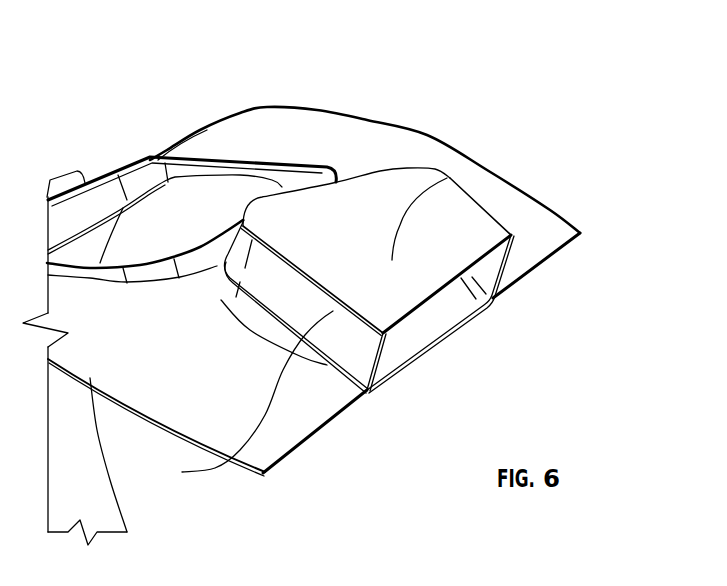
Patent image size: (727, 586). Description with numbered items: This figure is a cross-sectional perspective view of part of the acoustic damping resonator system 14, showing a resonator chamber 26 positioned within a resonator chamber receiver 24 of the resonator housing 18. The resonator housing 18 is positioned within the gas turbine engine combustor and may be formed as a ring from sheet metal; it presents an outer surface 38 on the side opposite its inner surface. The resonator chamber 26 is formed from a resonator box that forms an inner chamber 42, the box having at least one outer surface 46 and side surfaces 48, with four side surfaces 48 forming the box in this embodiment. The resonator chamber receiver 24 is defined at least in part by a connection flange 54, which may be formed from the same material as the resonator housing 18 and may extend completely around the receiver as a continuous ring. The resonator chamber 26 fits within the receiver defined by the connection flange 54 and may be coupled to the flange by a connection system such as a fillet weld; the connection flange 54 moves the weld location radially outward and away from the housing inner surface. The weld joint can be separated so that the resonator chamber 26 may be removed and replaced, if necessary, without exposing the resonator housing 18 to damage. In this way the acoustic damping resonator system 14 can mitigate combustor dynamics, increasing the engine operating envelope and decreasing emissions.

The acoustic damping resonator system 14 is at (562, 85).
The resonator housing 18 is at (537, 230).
The resonator chamber receiver 24 is at (367, 398).
The resonator chamber 26 is at (407, 193).
The outer surface 38 is at (220, 362).
The inner chamber 42 is at (425, 313).
The outer surface 46 is at (447, 178).
The side surface 48 is at (337, 182).
The connection flange 54 is at (327, 365).